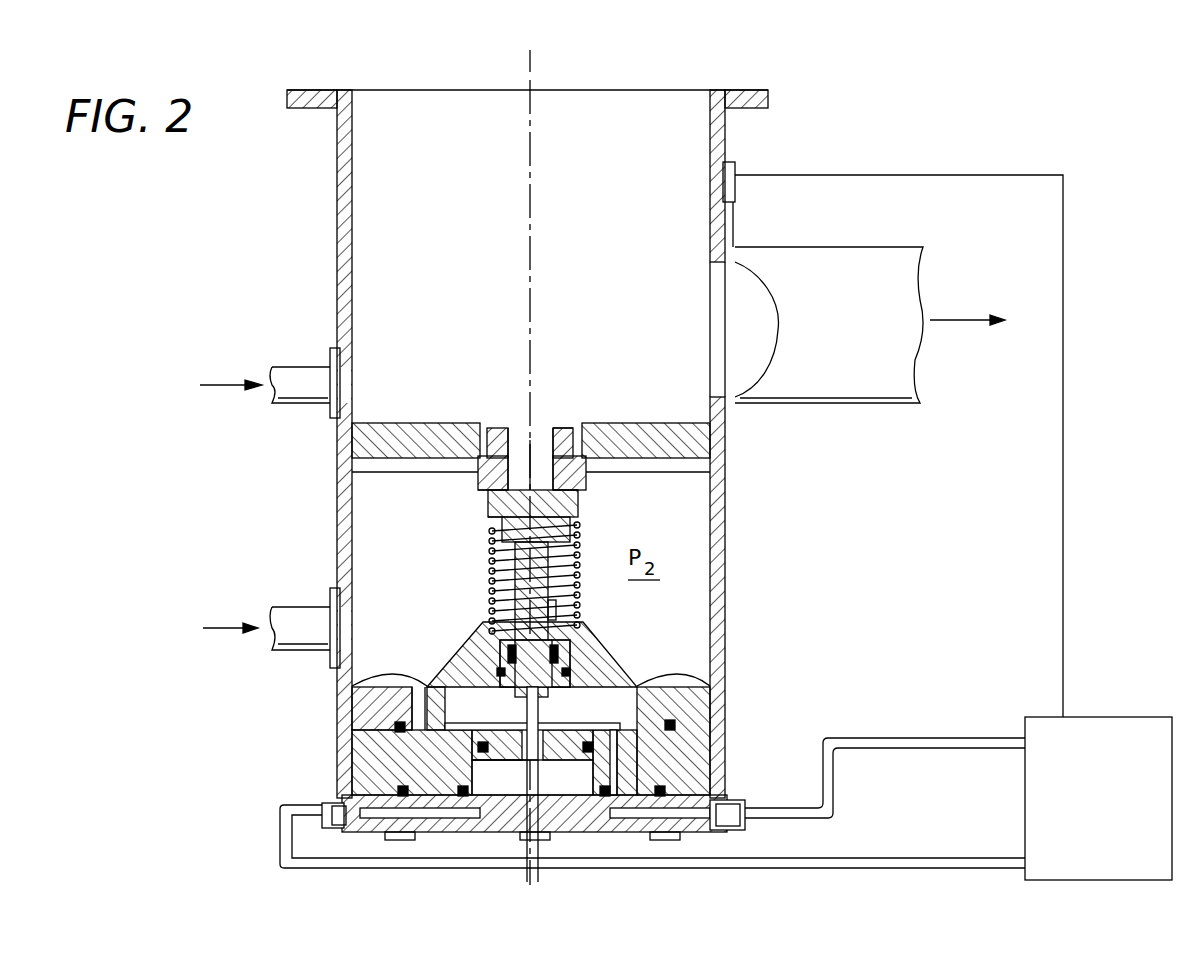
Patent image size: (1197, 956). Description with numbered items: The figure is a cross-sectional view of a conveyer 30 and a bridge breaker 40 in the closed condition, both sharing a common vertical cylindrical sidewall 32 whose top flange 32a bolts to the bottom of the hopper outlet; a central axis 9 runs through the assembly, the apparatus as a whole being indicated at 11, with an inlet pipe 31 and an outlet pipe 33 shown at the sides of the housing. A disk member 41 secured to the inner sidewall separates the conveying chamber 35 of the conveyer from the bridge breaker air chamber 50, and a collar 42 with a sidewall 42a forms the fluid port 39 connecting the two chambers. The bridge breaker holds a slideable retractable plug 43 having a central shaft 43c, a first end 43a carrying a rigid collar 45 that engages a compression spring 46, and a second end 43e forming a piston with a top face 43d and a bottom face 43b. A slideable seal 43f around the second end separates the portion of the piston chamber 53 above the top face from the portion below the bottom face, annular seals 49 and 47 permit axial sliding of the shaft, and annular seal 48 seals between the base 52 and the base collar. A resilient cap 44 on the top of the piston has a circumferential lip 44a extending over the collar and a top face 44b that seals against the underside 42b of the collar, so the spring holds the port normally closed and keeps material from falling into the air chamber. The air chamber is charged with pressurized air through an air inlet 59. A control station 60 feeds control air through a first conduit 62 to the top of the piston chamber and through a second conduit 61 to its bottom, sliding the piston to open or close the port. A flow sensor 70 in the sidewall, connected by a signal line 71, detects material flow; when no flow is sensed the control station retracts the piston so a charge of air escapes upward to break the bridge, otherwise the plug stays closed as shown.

The central axis 9 is at (535, 64).
The vacuum pump assembly 11 is at (213, 510).
The conveyer 30 is at (290, 184).
The first inlet pipe 31 is at (295, 367).
The sidewall 32 is at (723, 152).
The top flange 32a is at (768, 92).
The outlet pipe 33 is at (830, 247).
The conveying chamber 35 is at (455, 250).
The fluid port 39 is at (517, 437).
The bridge breaker 40 is at (798, 604).
The disk member 41 is at (725, 460).
The collar 42 is at (497, 430).
The sidewall 42a is at (548, 432).
The underside 42b is at (490, 488).
The retractable plug 43 is at (560, 590).
The first end 43a is at (575, 535).
The bottom face 43b is at (555, 787).
The central shaft 43c is at (552, 617).
The top face 43d is at (445, 665).
The second end 43e is at (555, 790).
The slideable seal 43f is at (530, 740).
The resilient cap 44 is at (488, 500).
The circumferential lip 44a is at (578, 488).
The top face 44b is at (540, 425).
The rigid collar 45 is at (488, 528).
The compression spring 46 is at (490, 572).
The annular seal 47 is at (590, 718).
The annular seal 48 is at (612, 678).
The annular seal 49 is at (560, 652).
The air chamber 50 is at (425, 617).
The base collar 52 is at (575, 682).
The piston chamber 53 is at (518, 775).
The air inlet 59 is at (290, 607).
The control station 60 is at (1095, 717).
The second conduit 61 is at (878, 868).
The first conduit 62 is at (947, 738).
The flow sensor 70 is at (735, 167).
The sensor signal line 71 is at (1066, 472).